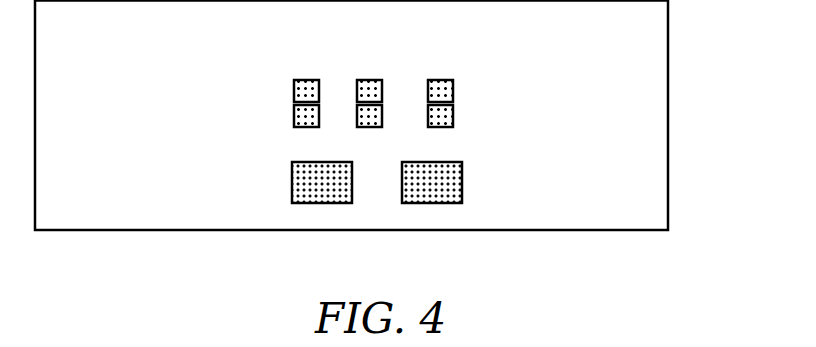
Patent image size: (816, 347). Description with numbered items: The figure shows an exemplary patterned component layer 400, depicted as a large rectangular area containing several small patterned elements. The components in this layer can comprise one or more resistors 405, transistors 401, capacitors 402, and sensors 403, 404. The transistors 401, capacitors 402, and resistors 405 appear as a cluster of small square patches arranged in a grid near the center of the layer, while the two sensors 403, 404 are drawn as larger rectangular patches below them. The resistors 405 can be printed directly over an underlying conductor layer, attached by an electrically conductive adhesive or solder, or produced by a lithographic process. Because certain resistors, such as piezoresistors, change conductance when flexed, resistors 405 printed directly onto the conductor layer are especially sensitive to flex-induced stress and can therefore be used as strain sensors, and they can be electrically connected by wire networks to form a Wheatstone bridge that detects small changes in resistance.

The patterned component layer 400 is at (646, 243).
The transistors 401 is at (367, 80).
The capacitors 402 is at (453, 120).
The sensor 403 is at (437, 199).
The sensor 404 is at (315, 201).
The resistors 405 is at (294, 120).